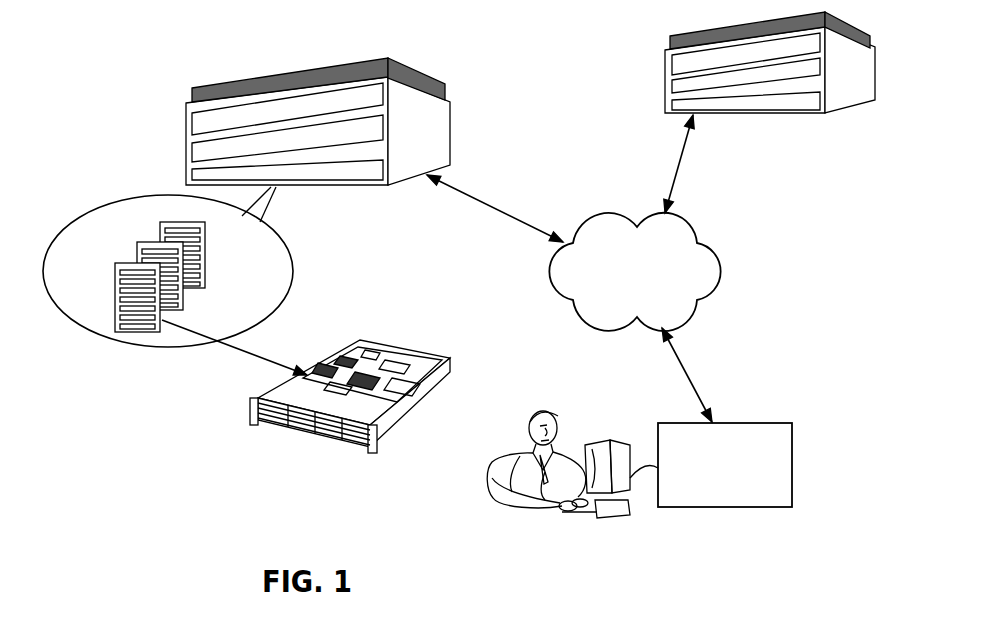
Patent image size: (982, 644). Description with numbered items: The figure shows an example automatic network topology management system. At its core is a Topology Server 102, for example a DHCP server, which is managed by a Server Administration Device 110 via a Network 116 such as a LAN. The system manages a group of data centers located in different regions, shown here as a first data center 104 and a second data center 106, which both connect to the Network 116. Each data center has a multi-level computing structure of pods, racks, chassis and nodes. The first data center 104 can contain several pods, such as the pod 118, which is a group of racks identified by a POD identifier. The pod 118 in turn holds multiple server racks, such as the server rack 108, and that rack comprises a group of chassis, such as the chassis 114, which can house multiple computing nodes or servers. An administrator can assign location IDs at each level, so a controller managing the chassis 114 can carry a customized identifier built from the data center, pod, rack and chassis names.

The Topology Server 102 is at (712, 487).
The Data Center 1A 104 is at (318, 155).
The Data Center 2A 106 is at (770, 94).
The Server Rack 3a 108 is at (132, 333).
The Server Administration Device 110 is at (558, 518).
The Chassis 4f 114 is at (350, 420).
The Network 116 is at (624, 291).
The Pod 2A 118 is at (234, 295).